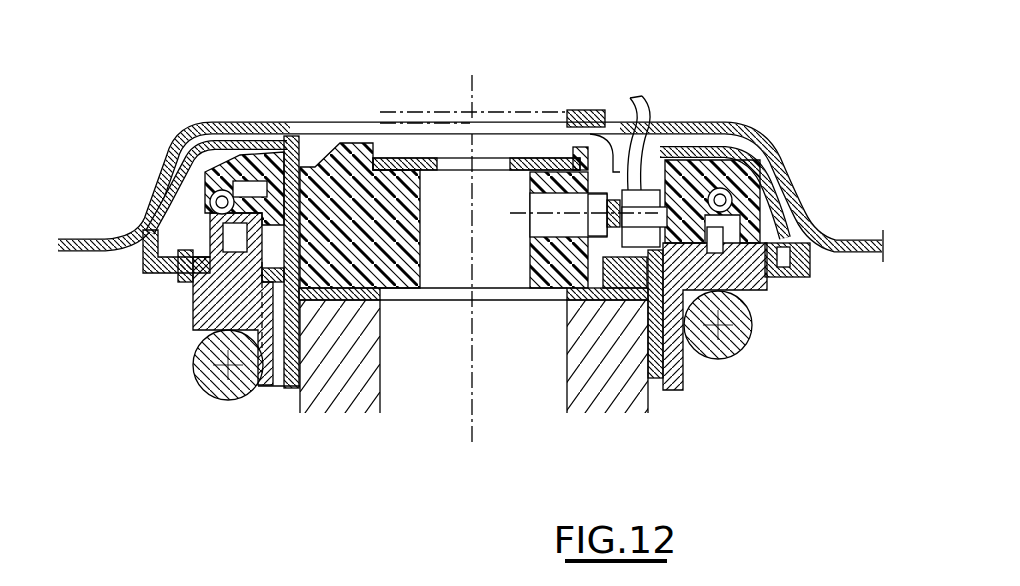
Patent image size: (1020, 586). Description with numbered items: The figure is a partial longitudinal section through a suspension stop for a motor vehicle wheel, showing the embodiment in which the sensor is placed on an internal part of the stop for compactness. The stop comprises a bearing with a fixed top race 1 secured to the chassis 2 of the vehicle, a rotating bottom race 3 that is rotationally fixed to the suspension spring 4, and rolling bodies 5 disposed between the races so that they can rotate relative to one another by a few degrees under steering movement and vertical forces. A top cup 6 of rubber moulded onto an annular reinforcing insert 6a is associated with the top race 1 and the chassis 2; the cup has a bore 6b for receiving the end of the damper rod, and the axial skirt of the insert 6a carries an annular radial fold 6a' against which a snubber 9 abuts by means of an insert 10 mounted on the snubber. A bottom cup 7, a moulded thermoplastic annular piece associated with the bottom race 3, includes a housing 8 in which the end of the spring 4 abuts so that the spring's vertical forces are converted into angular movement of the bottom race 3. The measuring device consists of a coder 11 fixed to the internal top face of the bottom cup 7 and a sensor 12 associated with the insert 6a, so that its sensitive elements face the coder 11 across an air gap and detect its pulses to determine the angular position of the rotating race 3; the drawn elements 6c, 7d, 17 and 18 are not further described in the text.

The fixed top race 1 is at (233, 172).
The chassis 2 is at (603, 117).
The rotating bottom race 3 is at (172, 245).
The suspension spring 4 is at (213, 378).
The rolling bodies 5 is at (210, 197).
The top cup 6 is at (360, 160).
The annular reinforcing insert 6a is at (288, 218).
The annular radial fold 6a' is at (353, 349).
The bore 6b is at (453, 370).
The hub projection 6c is at (768, 277).
The bottom cup 7 is at (193, 323).
The ball 7d is at (757, 287).
The housing 8 is at (247, 340).
The snubber 9 is at (330, 388).
The insert 10 is at (370, 300).
The coder 11 is at (197, 313).
The sensor 12 is at (657, 143).
The sleeve 17 is at (582, 324).
The sensor 18 is at (600, 193).